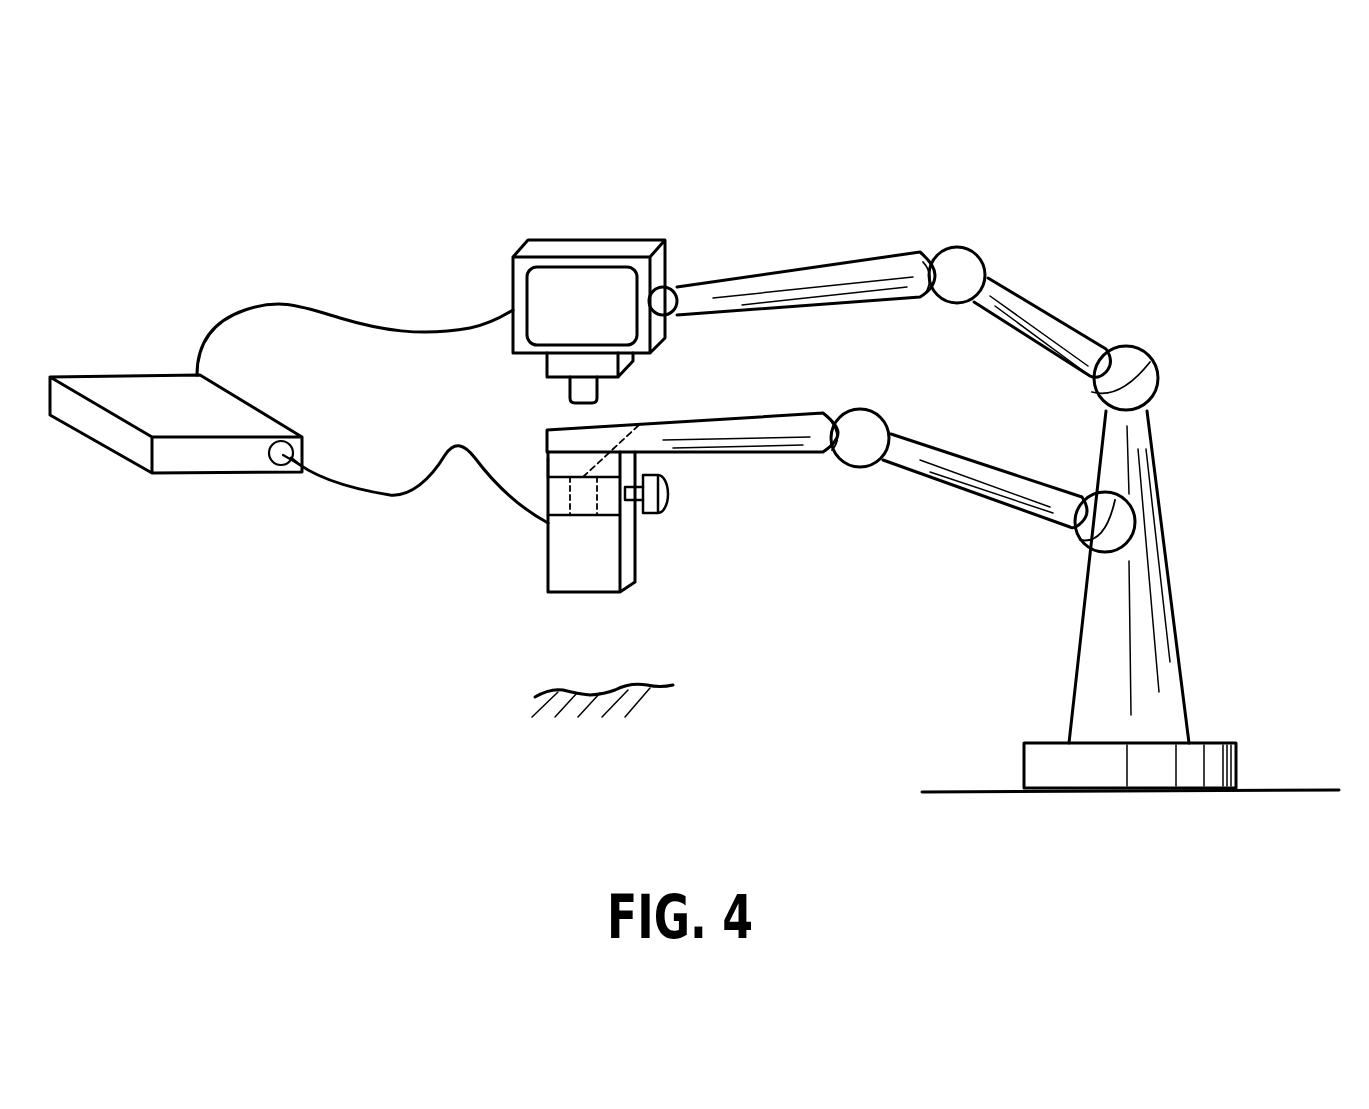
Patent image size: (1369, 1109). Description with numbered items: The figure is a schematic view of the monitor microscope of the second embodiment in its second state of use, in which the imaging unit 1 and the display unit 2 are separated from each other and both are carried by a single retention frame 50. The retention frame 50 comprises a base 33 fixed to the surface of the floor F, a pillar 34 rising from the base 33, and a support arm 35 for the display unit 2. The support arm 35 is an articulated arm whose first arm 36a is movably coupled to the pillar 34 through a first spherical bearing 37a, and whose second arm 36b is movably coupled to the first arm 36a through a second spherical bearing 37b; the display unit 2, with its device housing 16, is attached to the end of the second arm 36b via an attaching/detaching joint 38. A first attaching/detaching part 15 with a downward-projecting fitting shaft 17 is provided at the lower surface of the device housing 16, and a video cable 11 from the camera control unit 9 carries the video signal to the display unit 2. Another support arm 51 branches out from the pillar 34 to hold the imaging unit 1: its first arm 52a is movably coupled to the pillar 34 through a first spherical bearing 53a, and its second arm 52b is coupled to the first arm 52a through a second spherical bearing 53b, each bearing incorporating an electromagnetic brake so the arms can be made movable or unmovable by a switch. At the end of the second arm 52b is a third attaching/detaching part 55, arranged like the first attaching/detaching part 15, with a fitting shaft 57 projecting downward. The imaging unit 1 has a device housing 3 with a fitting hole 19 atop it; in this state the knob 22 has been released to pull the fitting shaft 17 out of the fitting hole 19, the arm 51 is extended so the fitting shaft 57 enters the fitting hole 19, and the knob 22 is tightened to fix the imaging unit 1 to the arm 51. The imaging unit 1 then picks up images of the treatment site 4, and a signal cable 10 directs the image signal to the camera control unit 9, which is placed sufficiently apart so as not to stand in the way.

The imaging unit 1 is at (592, 512).
The display unit 2 is at (592, 286).
The device housing 3 is at (548, 577).
The treatment site 4 is at (570, 687).
The camera control unit (CCU) 9 is at (228, 475).
The signal cable 10 is at (393, 497).
The video cable 11 is at (345, 318).
The first attaching/detaching part 15 is at (627, 360).
The device housing 16 is at (617, 237).
The fitting shaft 17 is at (563, 392).
The fitting hole 19 is at (583, 516).
The knob 22 is at (657, 514).
The base 33 is at (1226, 741).
The pillar 34 is at (1161, 614).
The support arm 35 is at (958, 267).
The first arm 36a is at (1045, 322).
The second arm 36b is at (843, 273).
The first spherical bearing 37a is at (1181, 379).
The second spherical bearing 37b is at (962, 253).
The attaching/detaching joint 38 is at (680, 277).
The retention frame 50 is at (1139, 518).
The support arm 51 is at (907, 460).
The first arm 52a is at (973, 464).
The second arm 52b is at (785, 415).
The first spherical bearing 53a is at (1171, 526).
The second spherical bearing 53b is at (857, 407).
The third attaching/detaching part 55 is at (548, 458).
The fitting shaft 57 is at (623, 433).
The floor F is at (1286, 788).